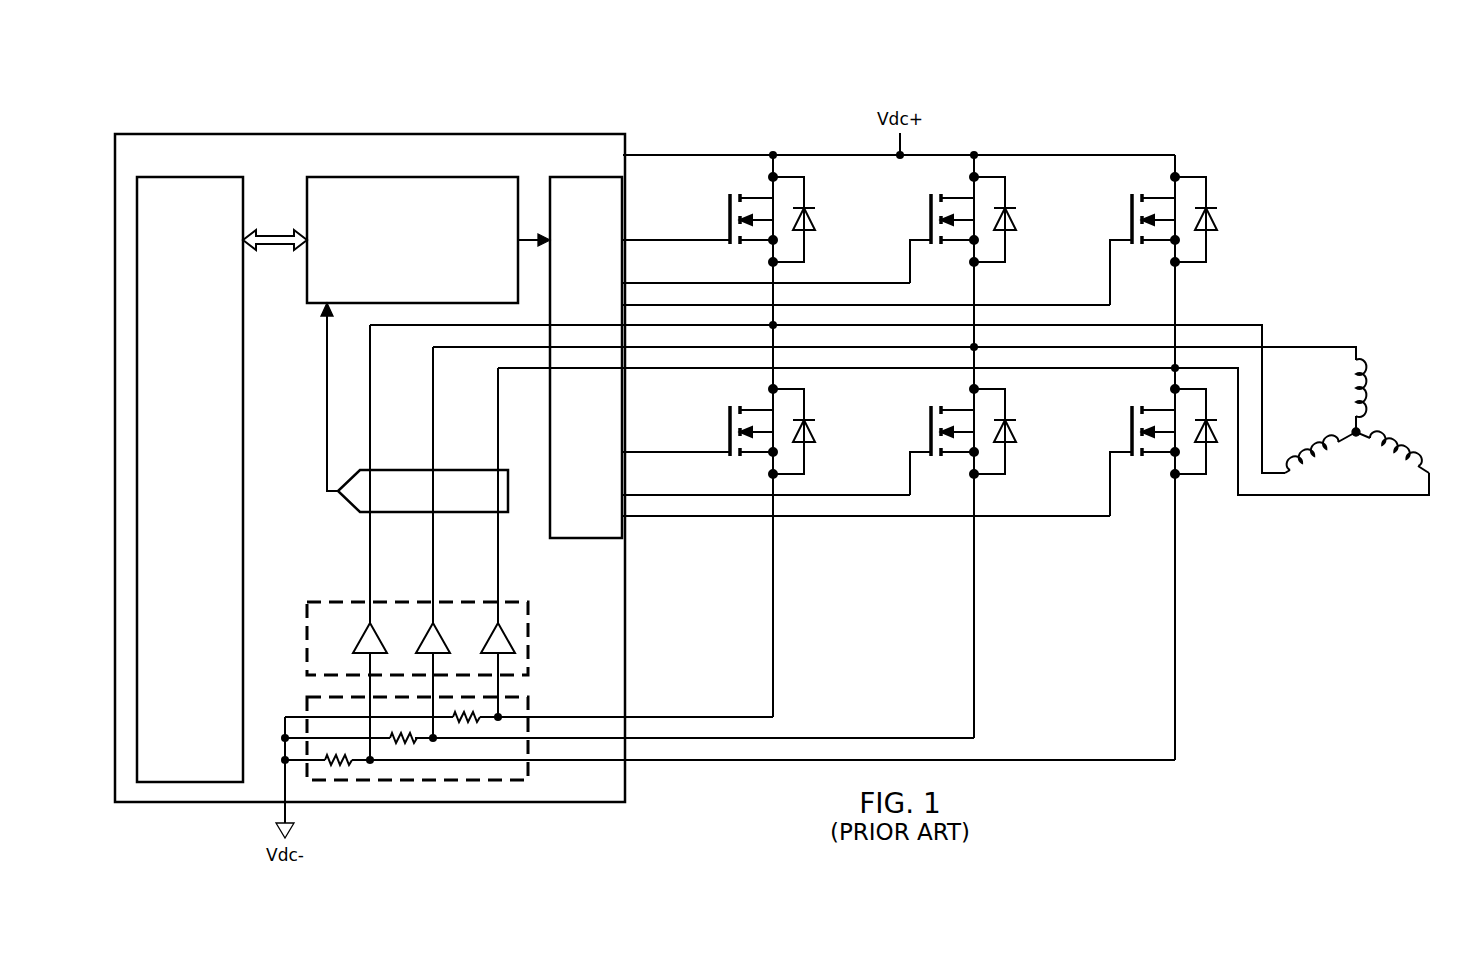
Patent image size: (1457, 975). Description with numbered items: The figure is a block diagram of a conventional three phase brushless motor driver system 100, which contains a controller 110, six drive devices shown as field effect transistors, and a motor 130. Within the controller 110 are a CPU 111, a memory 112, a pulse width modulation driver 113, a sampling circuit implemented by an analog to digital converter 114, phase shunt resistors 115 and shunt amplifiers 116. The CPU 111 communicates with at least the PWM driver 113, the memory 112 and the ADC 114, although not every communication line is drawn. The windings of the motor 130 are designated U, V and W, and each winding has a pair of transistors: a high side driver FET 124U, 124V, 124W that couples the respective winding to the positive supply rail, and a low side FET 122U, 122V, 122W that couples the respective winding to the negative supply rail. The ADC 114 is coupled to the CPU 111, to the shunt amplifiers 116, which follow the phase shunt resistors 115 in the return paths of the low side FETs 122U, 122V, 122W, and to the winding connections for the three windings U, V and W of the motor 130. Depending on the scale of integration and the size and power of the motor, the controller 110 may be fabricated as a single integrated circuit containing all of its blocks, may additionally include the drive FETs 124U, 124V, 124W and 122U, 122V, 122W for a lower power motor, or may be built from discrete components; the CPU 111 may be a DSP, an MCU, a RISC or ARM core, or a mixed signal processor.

The three phase brushless motor driver system 100 is at (540, 94).
The controller 110 is at (256, 136).
The CPU 111 is at (433, 270).
The memory 112 is at (211, 509).
The pulse width modulation (PWM) driver 113 is at (608, 481).
The analog to digital converter (ADC) 114 is at (413, 468).
The phase shunt resistors 115 is at (529, 702).
The shunt amplifiers 116 is at (529, 640).
The high side driver FET 124V is at (727, 213).
The high side driver FET 124U is at (928, 213).
The high side driver FET 124W is at (1130, 213).
The low side FET 122V is at (727, 424).
The low side FET 122U is at (928, 424).
The low side FET 122W is at (1130, 424).
The motor 130 is at (1375, 337).